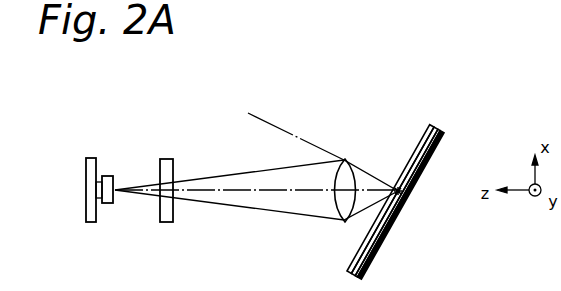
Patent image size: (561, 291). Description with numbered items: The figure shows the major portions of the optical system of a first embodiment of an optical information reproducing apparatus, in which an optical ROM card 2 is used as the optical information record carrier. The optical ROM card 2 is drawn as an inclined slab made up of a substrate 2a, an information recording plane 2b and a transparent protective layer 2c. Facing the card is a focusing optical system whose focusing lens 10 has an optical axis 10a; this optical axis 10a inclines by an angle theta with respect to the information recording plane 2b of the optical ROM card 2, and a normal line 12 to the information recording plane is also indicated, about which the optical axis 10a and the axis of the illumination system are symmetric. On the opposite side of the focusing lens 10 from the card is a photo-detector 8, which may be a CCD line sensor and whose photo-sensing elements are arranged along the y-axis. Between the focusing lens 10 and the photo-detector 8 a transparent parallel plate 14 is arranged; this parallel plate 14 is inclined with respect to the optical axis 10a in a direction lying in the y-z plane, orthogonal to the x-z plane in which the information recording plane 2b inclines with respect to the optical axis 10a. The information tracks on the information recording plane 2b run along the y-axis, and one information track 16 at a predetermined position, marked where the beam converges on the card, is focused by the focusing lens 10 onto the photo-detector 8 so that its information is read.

The optical ROM card 2 is at (439, 167).
The substrate 2a is at (425, 202).
The information recording plane 2b is at (437, 128).
The transparent protective layer 2c is at (428, 124).
The photo-detector 8 is at (107, 203).
The focusing lens 10 is at (343, 223).
The optical axis 10a is at (275, 191).
The normal line 12 is at (270, 124).
The transparent parallel plate 14 is at (166, 222).
The information track 16 is at (403, 196).